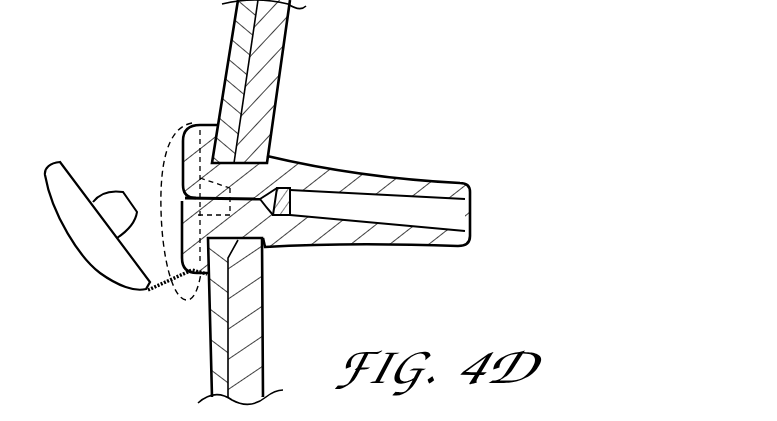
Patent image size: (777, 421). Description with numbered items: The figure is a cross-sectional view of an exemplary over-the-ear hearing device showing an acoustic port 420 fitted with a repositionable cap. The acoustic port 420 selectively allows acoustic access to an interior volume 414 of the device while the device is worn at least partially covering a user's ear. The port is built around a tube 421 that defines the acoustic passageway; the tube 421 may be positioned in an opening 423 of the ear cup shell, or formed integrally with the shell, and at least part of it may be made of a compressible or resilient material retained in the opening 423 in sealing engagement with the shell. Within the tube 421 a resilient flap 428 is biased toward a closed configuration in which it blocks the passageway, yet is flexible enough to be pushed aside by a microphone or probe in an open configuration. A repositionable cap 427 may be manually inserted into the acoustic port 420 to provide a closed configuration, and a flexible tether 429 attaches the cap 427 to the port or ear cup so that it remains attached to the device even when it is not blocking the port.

The interior volume 414 is at (538, 232).
The acoustic port 420 is at (195, 108).
The tube 421 is at (188, 152).
The opening 423 is at (246, 161).
The repositionable cap 427 is at (82, 255).
The resilient flap 428 is at (292, 189).
The flexible tether 429 is at (154, 293).